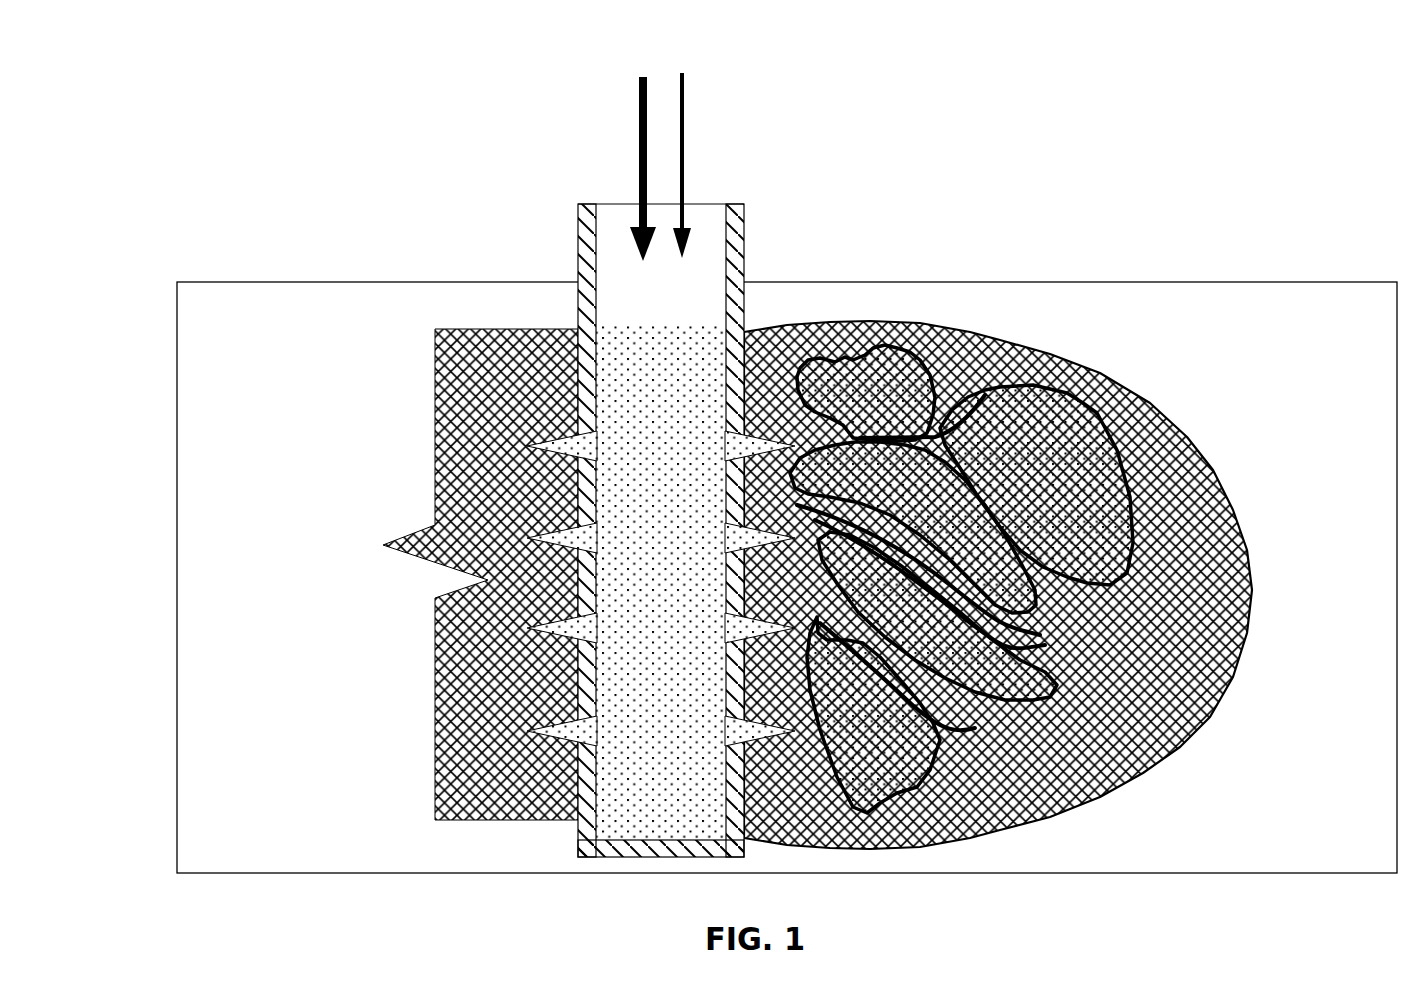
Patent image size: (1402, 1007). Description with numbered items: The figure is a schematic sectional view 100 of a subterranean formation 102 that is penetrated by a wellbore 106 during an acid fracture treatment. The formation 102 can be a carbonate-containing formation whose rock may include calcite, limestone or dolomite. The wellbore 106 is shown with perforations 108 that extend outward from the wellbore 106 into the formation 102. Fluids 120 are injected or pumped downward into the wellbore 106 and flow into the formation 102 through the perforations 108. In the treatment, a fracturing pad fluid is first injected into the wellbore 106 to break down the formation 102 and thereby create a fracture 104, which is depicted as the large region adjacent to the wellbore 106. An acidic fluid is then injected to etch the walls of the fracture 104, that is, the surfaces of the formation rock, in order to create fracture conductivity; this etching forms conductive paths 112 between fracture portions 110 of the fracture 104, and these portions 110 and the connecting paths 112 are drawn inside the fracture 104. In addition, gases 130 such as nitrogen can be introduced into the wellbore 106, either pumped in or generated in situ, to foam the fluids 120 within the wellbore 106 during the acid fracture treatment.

The sectional view 100 is at (140, 82).
The subterranean formation 102 is at (272, 271).
The formation fracture 104 is at (1232, 469).
The wellbore 106 is at (607, 247).
The perforation 108 is at (567, 723).
The fracture portion 110 is at (1062, 412).
The conductive path 112 is at (968, 393).
The fluids 120 is at (640, 142).
The gases 130 is at (684, 143).